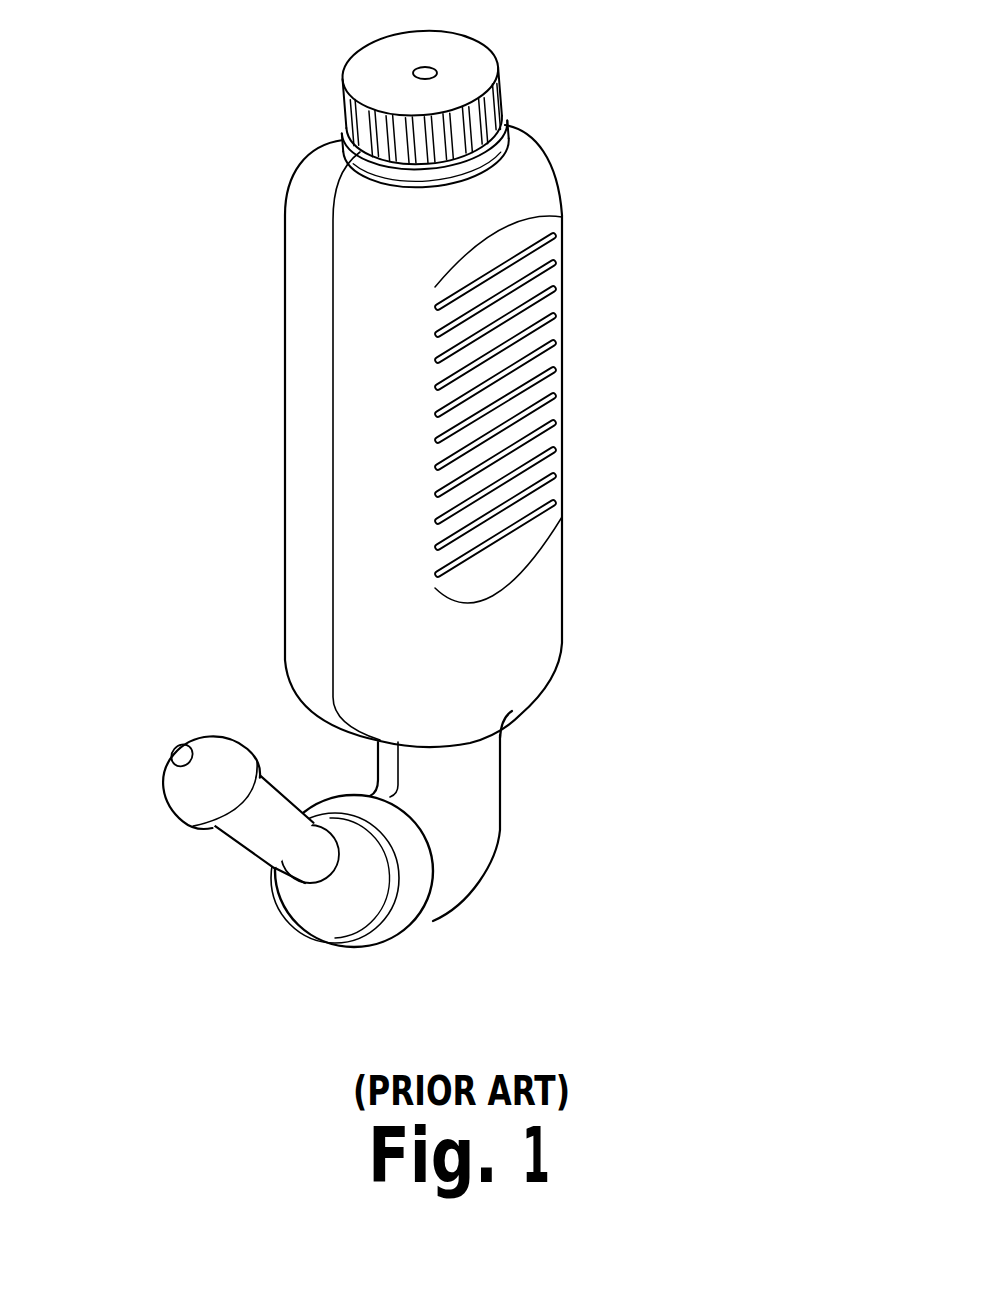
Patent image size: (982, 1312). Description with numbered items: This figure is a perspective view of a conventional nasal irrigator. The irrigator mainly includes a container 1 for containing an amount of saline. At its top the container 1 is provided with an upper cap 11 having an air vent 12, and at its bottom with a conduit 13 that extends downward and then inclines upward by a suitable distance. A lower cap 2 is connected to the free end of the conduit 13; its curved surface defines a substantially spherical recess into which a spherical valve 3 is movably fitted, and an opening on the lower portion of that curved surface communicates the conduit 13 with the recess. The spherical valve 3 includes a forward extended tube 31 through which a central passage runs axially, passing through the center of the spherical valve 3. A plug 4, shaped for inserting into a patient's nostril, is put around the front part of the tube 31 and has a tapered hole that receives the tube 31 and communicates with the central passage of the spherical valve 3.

The container 1 is at (562, 430).
The upper cap 11 is at (500, 118).
The air vent 12 is at (433, 73).
The conduit 13 is at (483, 830).
The lower cap 2 is at (417, 910).
The spherical valve 3 is at (313, 910).
The tube 31 is at (298, 865).
The plug 4 is at (177, 792).